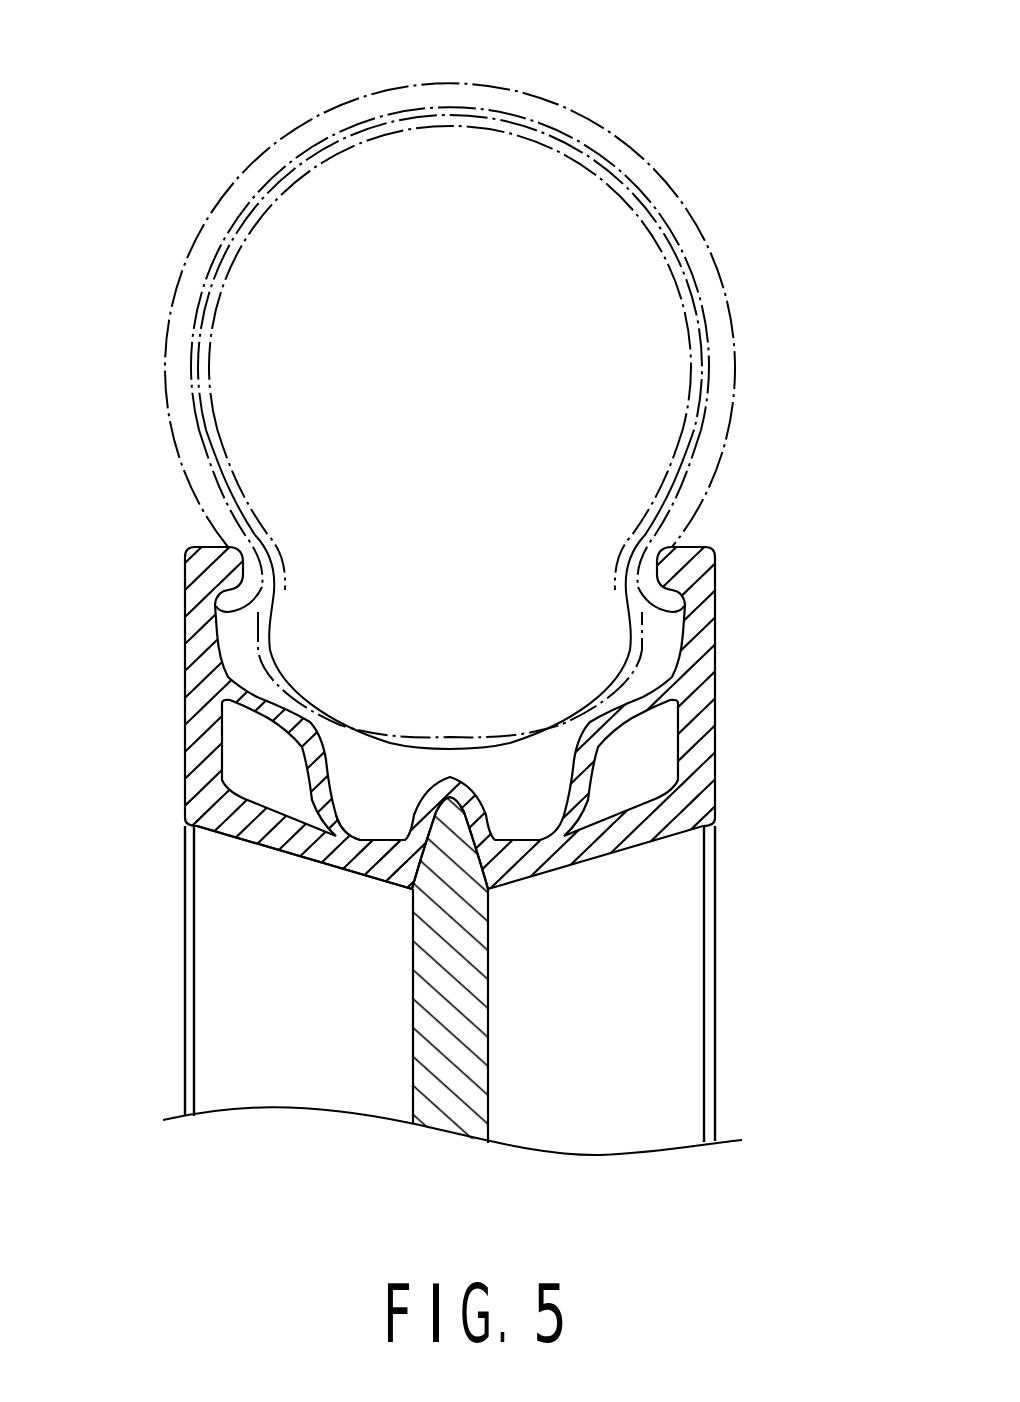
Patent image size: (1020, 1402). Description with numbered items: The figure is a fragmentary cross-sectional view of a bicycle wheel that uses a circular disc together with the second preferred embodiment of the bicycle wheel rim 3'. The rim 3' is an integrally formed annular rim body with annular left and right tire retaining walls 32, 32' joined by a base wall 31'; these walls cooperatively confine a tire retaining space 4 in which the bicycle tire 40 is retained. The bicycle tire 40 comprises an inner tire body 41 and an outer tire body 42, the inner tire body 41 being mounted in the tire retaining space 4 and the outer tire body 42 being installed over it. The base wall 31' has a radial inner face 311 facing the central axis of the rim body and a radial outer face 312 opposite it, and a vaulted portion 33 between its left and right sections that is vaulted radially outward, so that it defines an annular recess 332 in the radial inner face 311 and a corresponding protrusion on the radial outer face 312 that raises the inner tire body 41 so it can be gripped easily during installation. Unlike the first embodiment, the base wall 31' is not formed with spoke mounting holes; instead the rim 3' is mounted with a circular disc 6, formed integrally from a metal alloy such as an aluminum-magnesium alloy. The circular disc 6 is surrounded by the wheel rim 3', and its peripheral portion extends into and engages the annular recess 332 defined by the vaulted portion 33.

The bicycle tire 40 is at (658, 104).
The inner tire body 41 is at (644, 200).
The outer tire body 42 is at (718, 300).
The tire retaining space 4 is at (660, 644).
The bicycle wheel rim 3' is at (429, 757).
The left tire retaining wall 32 is at (160, 831).
The right tire retaining wall 32' is at (739, 844).
The vaulted portion 33 is at (478, 795).
The base wall 31' is at (497, 875).
The radial inner face 311 is at (365, 873).
The radial outer face 312 is at (383, 838).
The annular recess 332 is at (487, 907).
The circular disc 6 is at (487, 1110).